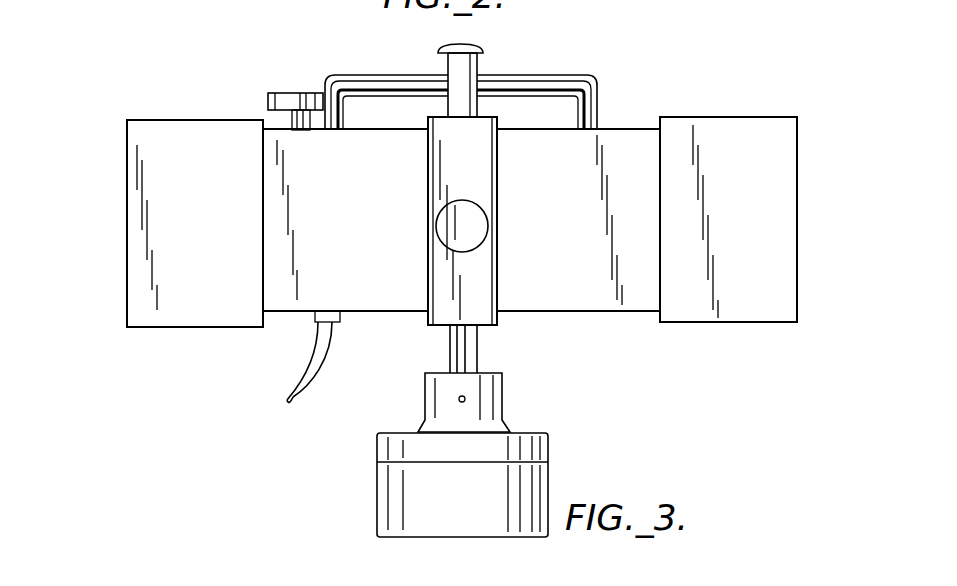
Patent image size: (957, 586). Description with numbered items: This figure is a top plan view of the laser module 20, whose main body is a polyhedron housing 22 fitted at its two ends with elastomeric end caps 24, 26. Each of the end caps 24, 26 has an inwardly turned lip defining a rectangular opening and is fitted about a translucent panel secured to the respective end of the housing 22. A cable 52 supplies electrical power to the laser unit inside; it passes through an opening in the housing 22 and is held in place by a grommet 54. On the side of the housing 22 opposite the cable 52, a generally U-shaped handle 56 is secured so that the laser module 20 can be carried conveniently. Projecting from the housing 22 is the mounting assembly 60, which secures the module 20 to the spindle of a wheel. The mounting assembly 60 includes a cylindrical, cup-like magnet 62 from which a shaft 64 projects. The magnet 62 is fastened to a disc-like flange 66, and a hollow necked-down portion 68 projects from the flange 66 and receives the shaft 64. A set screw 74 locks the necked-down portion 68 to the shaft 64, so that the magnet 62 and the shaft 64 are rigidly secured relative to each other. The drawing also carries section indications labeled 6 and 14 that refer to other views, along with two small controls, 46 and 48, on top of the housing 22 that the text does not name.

The section line 6- 6 is at (100, 228).
The optical axis / reference line 14 is at (448, 105).
The laser module 20 is at (676, 50).
The polyhedron housing 22 is at (614, 137).
The elastomeric end cap 24 is at (178, 127).
The elastomeric end cap 26 is at (733, 125).
The valve stem 46 is at (306, 118).
The knob 48 is at (296, 93).
The cable 52 is at (306, 384).
The grommet 54 is at (339, 322).
The handle 56 is at (550, 83).
The mounting assembly 60 is at (522, 174).
The magnet 62 is at (385, 497).
The shaft 64 is at (478, 357).
The disc-like flange 66 is at (386, 448).
The necked-down portion 68 is at (425, 396).
The set screw 74 is at (466, 402).